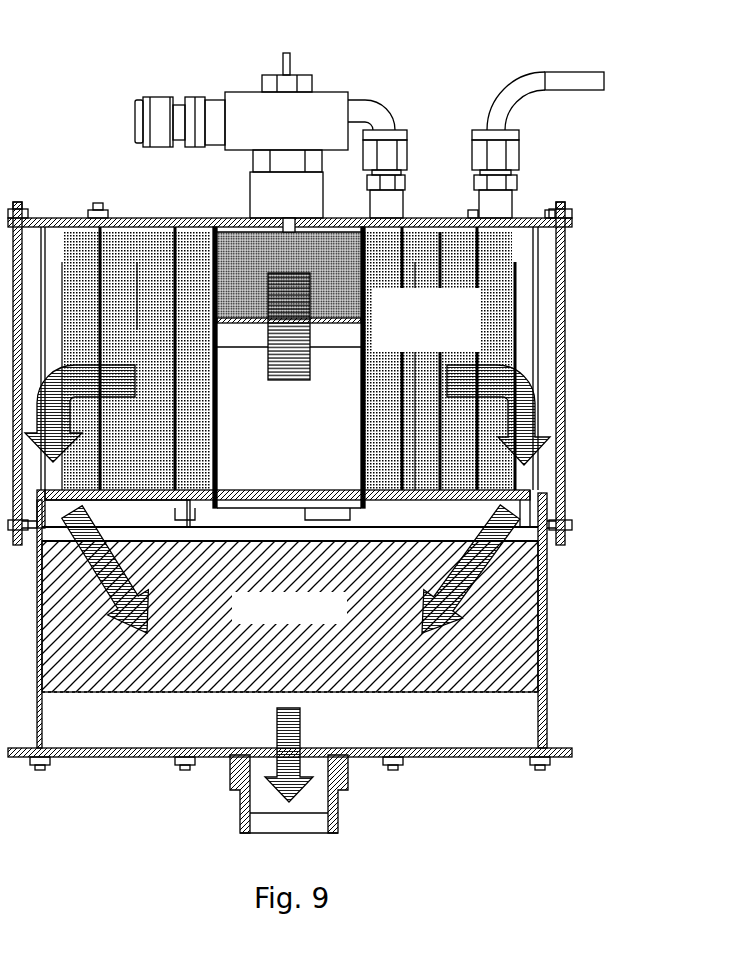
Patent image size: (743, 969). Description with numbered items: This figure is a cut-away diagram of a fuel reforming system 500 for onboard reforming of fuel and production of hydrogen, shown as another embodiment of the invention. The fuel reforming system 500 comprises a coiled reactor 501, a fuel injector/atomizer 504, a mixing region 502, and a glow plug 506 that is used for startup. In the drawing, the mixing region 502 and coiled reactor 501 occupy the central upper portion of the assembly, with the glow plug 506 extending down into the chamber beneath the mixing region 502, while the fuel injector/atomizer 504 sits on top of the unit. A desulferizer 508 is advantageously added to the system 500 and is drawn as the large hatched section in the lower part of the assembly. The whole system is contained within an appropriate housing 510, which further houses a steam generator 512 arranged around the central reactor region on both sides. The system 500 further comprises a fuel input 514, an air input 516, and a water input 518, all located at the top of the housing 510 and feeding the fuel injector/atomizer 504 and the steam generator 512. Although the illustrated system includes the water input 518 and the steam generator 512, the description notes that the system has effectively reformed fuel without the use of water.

The fuel reforming system 500 is at (709, 190).
The coiled reactor 501 is at (238, 250).
The mixing region 502 is at (290, 232).
The fuel injector/atomizer 504 is at (322, 103).
The glow plug 506 is at (287, 383).
The desulferizer 508 is at (522, 633).
The housing 510 is at (62, 217).
The steam generator 512 is at (507, 305).
The fuel input 514 is at (251, 41).
The air input 516 is at (108, 114).
The water input 518 is at (617, 80).